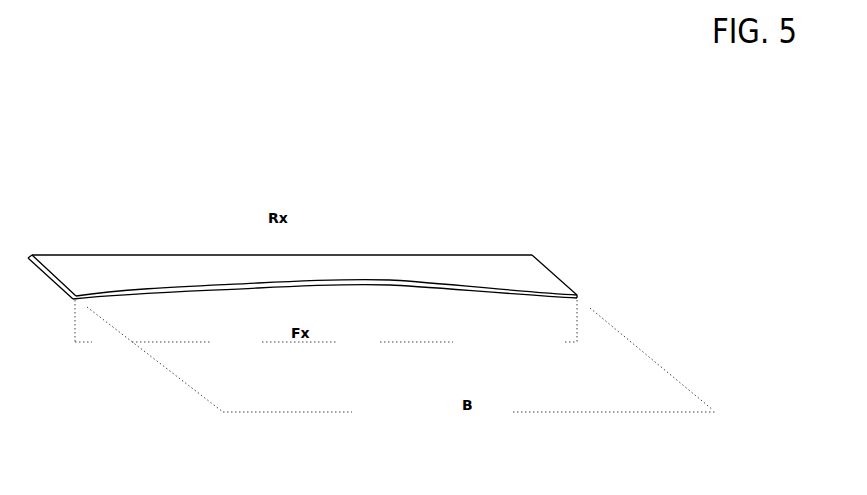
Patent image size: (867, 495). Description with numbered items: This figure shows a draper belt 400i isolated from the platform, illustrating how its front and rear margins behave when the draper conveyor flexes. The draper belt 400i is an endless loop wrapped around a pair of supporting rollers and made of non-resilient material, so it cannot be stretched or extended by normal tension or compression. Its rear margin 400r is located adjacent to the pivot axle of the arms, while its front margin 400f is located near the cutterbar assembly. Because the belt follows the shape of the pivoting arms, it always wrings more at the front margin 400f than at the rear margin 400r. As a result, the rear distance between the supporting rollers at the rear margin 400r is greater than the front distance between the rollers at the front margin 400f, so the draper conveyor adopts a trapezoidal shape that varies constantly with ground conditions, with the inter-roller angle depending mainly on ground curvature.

The rear margin 400r is at (125, 254).
The front margin 400f is at (258, 281).
The draper belt 400i is at (536, 274).